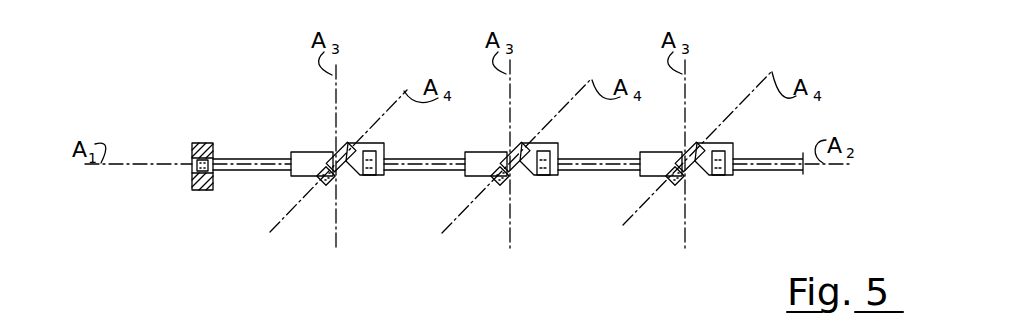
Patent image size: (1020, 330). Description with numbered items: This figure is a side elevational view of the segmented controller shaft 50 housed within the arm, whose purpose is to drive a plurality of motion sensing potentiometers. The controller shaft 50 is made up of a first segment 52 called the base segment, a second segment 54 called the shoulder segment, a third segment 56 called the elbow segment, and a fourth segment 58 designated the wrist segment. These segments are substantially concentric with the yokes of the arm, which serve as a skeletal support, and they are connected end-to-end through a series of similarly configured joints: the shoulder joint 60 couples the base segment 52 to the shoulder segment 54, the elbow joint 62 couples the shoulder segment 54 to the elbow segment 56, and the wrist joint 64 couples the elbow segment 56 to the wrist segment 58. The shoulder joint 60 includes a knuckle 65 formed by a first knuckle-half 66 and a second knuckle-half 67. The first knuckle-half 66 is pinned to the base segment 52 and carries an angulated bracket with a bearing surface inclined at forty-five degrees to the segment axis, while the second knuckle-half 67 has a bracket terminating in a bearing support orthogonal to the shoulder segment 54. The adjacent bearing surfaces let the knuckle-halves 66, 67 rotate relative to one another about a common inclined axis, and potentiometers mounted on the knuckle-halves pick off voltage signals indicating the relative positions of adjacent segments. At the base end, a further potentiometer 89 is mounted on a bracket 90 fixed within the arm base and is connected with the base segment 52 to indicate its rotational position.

The segmented controller shaft 50 is at (491, 122).
The first segment 52 is at (272, 160).
The second segment 54 is at (445, 158).
The third segment 56 is at (616, 158).
The fourth segment 58 is at (773, 157).
The shoulder joint 60 is at (331, 164).
The elbow joint 62 is at (512, 191).
The wrist joint 64 is at (687, 191).
The knuckle 65 is at (319, 145).
The first knuckle-half 66 is at (292, 173).
The second knuckle-half 67 is at (366, 145).
The potentiometer 89 is at (192, 158).
The bracket 90 is at (200, 190).